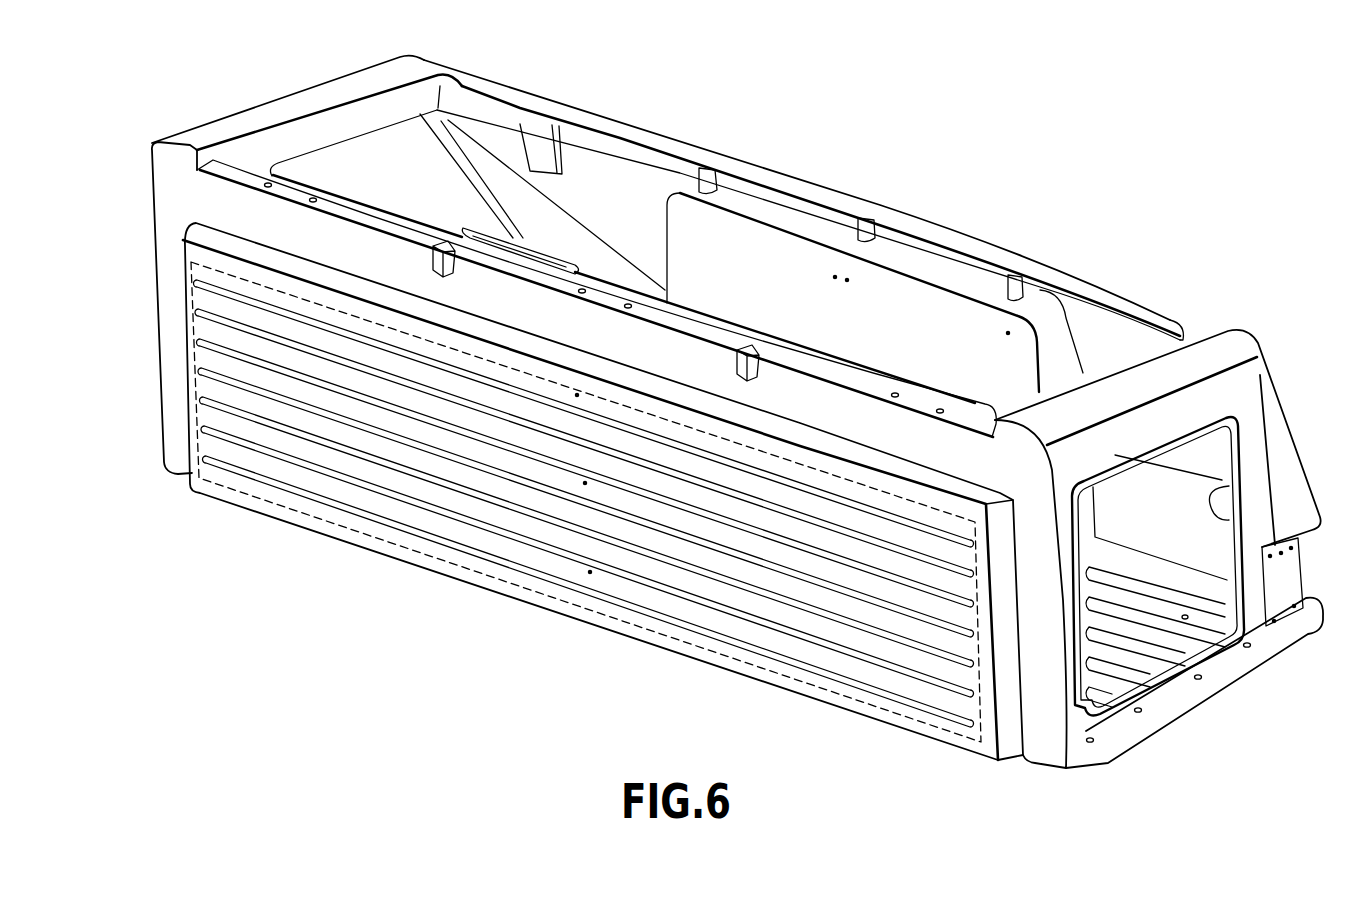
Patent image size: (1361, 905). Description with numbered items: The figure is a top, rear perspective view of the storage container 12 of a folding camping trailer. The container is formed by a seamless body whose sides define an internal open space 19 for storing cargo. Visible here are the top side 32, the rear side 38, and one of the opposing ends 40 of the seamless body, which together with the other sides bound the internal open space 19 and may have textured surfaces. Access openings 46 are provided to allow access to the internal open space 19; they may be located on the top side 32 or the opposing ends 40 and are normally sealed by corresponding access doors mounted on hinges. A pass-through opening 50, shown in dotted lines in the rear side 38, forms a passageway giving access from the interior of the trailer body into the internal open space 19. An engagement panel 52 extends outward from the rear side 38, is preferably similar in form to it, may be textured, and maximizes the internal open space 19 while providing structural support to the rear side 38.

The storage container 12 is at (722, 423).
The internal open space 19 is at (588, 158).
The top side 32 is at (320, 118).
The rear side 38 is at (167, 205).
The opposing end 40 is at (1213, 685).
The access opening 46 is at (818, 212).
The pass-through opening 50 is at (603, 491).
The engagement panel 52 is at (327, 532).